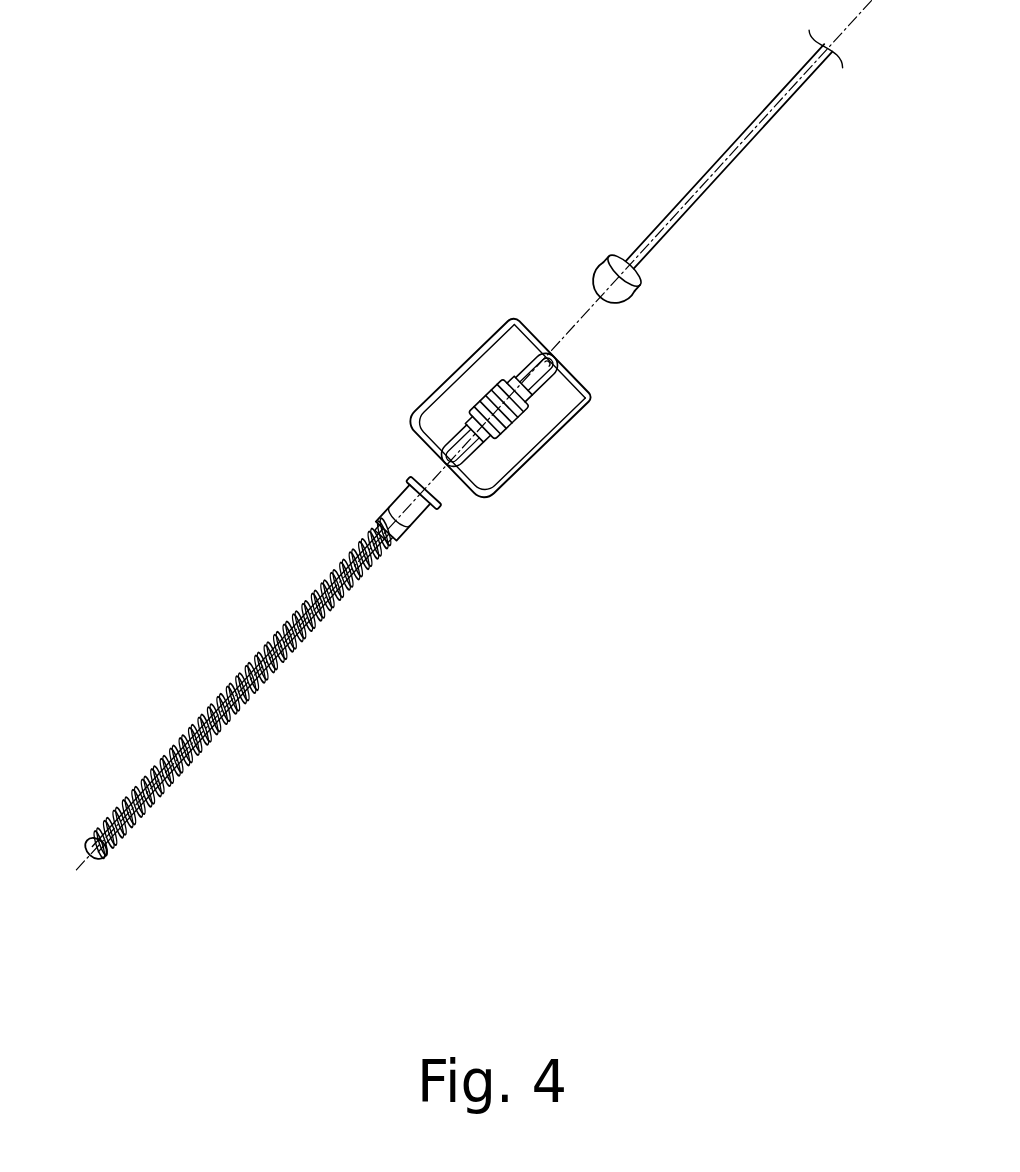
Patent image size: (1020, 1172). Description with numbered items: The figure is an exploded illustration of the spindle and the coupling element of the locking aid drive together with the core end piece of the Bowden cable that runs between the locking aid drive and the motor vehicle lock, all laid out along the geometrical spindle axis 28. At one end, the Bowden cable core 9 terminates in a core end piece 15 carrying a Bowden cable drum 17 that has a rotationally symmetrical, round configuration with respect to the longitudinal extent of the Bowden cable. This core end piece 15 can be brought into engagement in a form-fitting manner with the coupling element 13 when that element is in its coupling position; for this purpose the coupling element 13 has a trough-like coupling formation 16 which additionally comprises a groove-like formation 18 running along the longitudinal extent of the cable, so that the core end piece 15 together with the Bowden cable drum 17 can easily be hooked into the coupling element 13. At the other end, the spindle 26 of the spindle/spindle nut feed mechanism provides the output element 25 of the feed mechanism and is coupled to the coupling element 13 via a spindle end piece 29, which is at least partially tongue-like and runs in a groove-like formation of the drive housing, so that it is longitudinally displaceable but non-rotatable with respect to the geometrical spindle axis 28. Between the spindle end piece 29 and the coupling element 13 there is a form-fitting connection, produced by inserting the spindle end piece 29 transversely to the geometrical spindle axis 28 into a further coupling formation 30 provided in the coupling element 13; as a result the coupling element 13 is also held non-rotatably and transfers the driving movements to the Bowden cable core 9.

The Bowden cable core 9 is at (715, 163).
The coupling element 13 is at (590, 450).
The core end piece 15 is at (687, 268).
The coupling formation 16 is at (502, 380).
The Bowden cable drum 17 is at (613, 261).
The groove-like formation 18 is at (575, 351).
The output element 25 is at (242, 688).
The spindle 26 is at (277, 670).
The geometrical spindle axis 28 is at (83, 868).
The spindle end piece 29 is at (447, 513).
The further coupling formation 30 is at (500, 434).